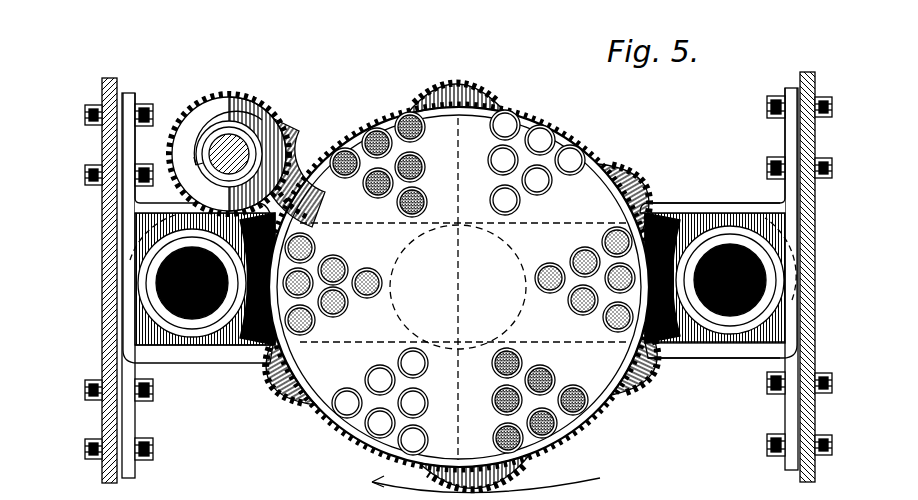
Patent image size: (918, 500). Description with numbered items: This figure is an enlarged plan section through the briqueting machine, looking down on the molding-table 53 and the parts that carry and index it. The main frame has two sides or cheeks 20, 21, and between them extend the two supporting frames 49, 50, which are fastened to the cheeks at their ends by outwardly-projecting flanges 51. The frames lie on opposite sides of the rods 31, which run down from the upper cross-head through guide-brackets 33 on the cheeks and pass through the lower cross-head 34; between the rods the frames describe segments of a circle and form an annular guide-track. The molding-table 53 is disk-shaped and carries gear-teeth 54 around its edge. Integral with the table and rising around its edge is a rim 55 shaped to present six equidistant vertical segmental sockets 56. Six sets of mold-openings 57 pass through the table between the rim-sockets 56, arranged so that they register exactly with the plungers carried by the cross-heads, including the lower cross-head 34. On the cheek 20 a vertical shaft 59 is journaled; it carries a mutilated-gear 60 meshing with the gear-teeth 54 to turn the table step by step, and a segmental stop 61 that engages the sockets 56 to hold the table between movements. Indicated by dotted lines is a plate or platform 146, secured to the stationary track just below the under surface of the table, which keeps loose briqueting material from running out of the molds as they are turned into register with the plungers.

The side or cheek 20 is at (112, 80).
The side or cheek 21 is at (807, 74).
The rod 31 is at (204, 305).
The guide-bracket 33 is at (208, 346).
The lower cross-head 34 is at (248, 346).
The supporting frame 49 is at (672, 207).
The supporting frame 50 is at (683, 352).
The outwardly-projecting flange 51 is at (128, 98).
The molding-table 53 is at (458, 118).
The gear-teeth 54 is at (401, 98).
The rim 55 is at (583, 128).
The segmental socket 56 is at (468, 84).
The mold-opening 57 is at (412, 210).
The vertical shaft 59 is at (244, 143).
The mutilated-gear 60 is at (229, 139).
The segmental stop 61 is at (300, 138).
The plate or platform 146 is at (465, 289).